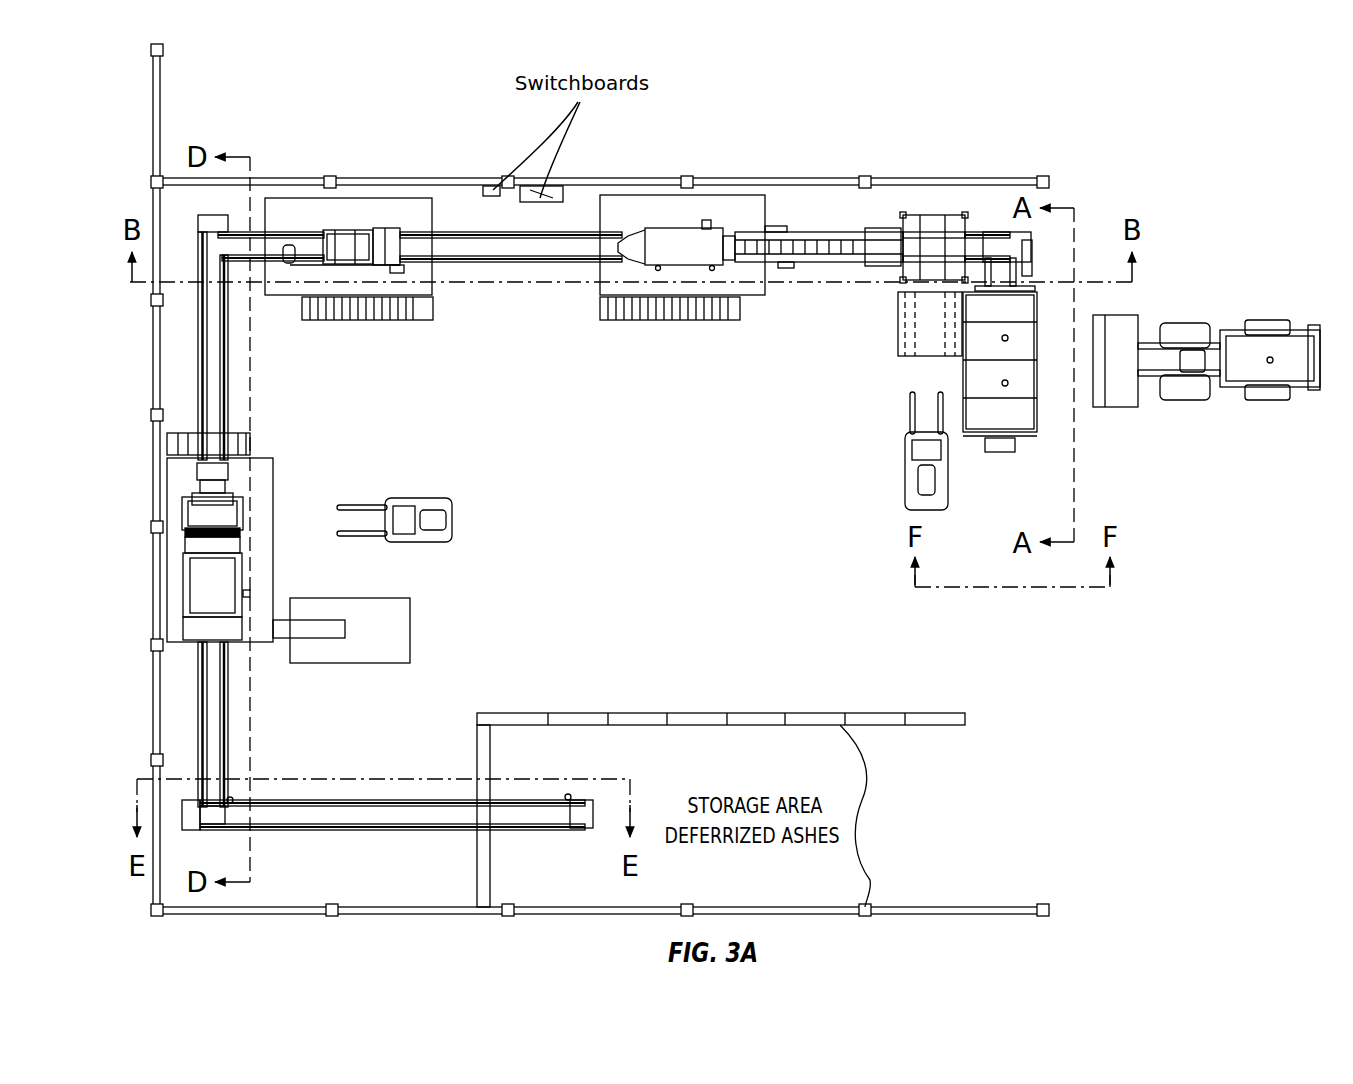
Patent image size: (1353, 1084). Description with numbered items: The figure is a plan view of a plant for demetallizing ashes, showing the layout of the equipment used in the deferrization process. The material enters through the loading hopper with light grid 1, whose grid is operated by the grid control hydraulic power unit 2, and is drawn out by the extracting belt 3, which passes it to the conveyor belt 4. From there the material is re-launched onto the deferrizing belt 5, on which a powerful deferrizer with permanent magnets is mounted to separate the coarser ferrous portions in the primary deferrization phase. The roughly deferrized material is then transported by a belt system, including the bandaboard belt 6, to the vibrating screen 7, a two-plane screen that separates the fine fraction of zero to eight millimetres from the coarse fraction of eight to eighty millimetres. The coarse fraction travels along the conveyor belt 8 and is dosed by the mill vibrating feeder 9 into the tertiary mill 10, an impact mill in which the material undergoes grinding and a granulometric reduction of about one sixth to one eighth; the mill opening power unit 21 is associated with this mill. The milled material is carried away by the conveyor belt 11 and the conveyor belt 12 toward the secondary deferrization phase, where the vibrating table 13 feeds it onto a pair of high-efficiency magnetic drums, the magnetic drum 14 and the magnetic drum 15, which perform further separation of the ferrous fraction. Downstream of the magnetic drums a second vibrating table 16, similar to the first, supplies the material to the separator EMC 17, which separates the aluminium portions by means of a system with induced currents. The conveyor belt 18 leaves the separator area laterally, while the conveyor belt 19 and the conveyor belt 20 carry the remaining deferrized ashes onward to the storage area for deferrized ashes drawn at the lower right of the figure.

The loading hopper with light grid 1 is at (1005, 402).
The grid control hydraulic power unit 2 is at (1013, 422).
The extracting belt 3 is at (998, 273).
The conveyor belt 4 is at (975, 235).
The deferrizing belt 5 is at (930, 227).
The bandaboard belt 6 is at (787, 237).
The vibrating screen 7 is at (677, 245).
The conveyor belt 8 is at (452, 243).
The mill vibrating feeder 9 is at (377, 243).
The tertiary mill 10 is at (347, 243).
The conveyor belt 11 is at (258, 243).
The conveyor belt 12 is at (212, 330).
The vibrating table 13 is at (190, 503).
The magnetic drum 14 is at (183, 518).
The magnetic drum 15 is at (183, 533).
The vibrating table 16 is at (183, 552).
The separator EMC 17 is at (183, 592).
The conveyor belt 18 is at (283, 640).
The conveyor belt 19 is at (200, 693).
The conveyor belt 20 is at (283, 818).
The mill opening power unit 21 is at (305, 210).